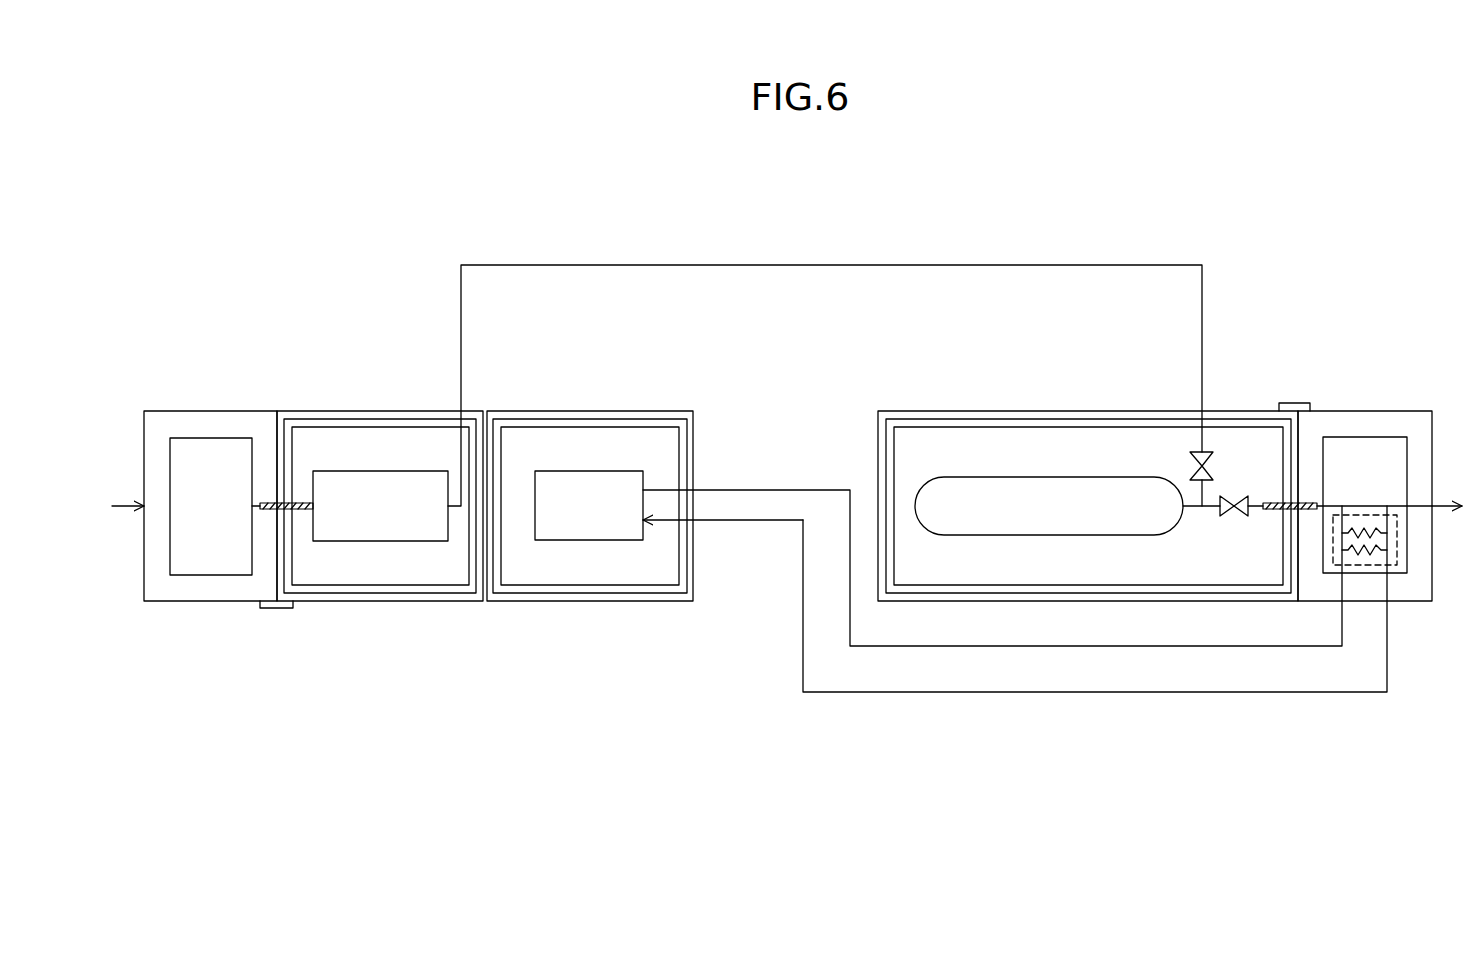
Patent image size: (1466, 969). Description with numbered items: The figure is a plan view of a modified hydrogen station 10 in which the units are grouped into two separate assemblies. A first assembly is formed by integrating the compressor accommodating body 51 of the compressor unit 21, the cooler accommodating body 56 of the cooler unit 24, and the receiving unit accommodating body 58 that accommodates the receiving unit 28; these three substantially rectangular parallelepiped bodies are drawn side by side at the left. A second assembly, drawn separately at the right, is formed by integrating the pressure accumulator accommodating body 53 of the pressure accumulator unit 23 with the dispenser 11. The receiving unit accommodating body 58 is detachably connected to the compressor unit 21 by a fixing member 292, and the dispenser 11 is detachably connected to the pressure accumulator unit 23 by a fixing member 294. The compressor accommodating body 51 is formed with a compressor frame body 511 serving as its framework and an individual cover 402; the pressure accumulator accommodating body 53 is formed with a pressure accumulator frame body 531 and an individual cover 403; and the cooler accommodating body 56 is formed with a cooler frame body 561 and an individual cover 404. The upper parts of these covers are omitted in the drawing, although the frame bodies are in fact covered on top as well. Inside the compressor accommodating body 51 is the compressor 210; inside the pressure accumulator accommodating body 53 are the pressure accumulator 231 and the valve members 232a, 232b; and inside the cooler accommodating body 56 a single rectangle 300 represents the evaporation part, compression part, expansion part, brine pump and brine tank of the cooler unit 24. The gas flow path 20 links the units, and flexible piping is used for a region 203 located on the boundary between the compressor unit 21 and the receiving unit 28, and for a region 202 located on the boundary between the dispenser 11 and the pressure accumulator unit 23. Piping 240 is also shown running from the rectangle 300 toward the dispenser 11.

The hydrogen station 10 is at (397, 220).
The dispenser 11 is at (1380, 411).
The gas flow path 20 is at (604, 265).
The compressor unit 21 is at (395, 360).
The pressure accumulator unit 23 is at (830, 443).
The cooler unit 24 is at (585, 628).
The receiving unit 28 is at (187, 437).
The compressor accommodating body 51 is at (413, 620).
The pressure accumulator accommodating body 53 is at (925, 386).
The cooler accommodating body 56 is at (635, 620).
The receiving unit accommodating body 58 is at (213, 411).
The region 202 is at (1285, 512).
The region 203 is at (290, 510).
The compressor 210 is at (333, 471).
The pressure accumulator 231 is at (924, 483).
The valve member 232a is at (1192, 462).
The valve member 232b is at (1236, 494).
The pipe 240 is at (840, 693).
The fixing member 292 is at (275, 610).
The fixing member 294 is at (1297, 402).
The device 300 is at (615, 541).
The individual cover 402 is at (425, 413).
The individual cover 403 is at (1090, 411).
The individual cover 404 is at (692, 548).
The compressor frame body 511 is at (373, 424).
The pressure accumulator frame body 531 is at (893, 472).
The cooler frame body 561 is at (681, 430).